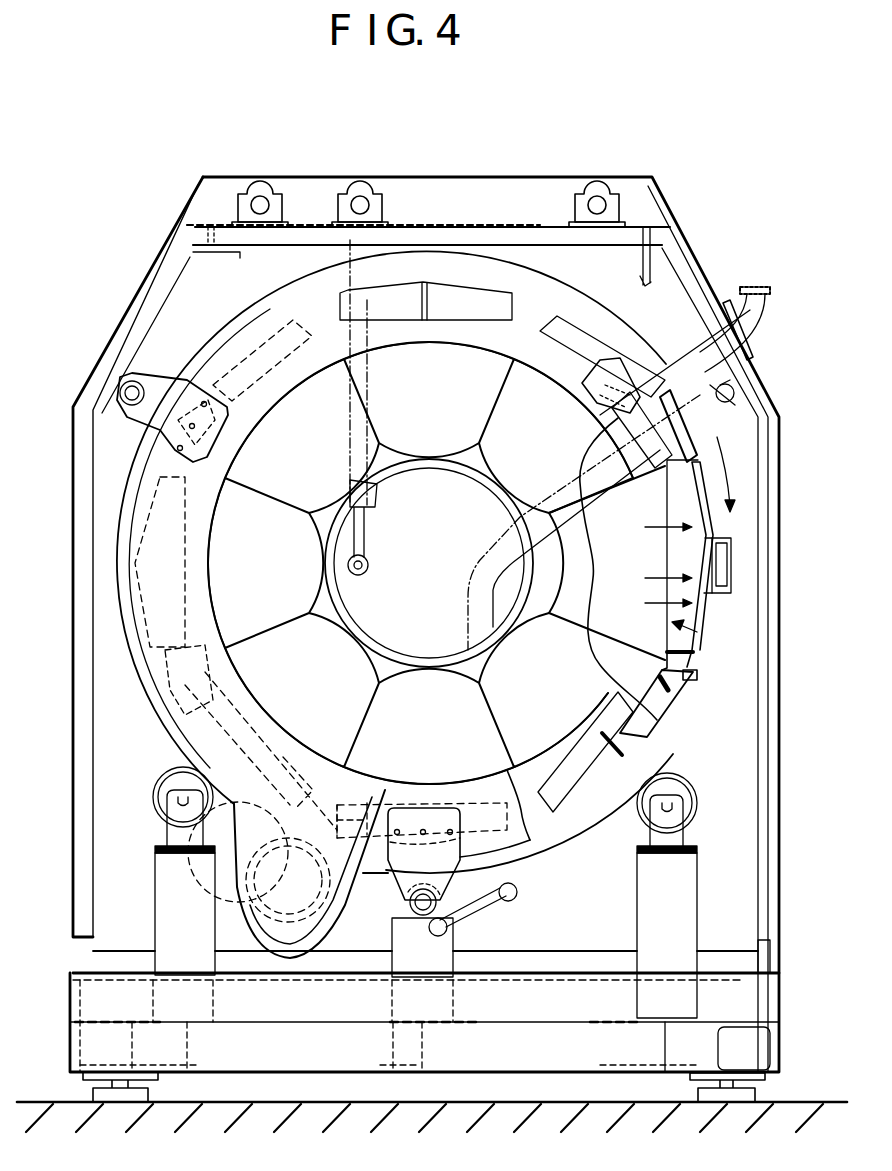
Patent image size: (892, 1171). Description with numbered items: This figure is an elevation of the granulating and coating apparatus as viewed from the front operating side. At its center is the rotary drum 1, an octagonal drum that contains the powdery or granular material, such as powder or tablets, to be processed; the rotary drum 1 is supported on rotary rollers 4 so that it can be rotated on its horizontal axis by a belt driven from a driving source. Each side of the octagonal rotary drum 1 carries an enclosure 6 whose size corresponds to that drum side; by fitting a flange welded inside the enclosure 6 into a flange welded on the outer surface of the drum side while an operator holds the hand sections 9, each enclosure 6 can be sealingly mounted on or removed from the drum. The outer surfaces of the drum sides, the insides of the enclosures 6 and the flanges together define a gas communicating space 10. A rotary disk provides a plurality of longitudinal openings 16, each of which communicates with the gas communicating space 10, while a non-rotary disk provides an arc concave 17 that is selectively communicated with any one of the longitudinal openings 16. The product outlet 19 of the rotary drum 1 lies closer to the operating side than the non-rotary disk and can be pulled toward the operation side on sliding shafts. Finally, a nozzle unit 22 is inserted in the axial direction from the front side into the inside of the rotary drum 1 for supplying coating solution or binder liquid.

The rotary drum 1 is at (703, 652).
The rotary rollers 4 is at (153, 797).
The enclosure 6 is at (708, 608).
The hand section 9 is at (730, 566).
The gas communicating space 10 is at (700, 532).
The longitudinal openings 16 is at (178, 700).
The arc concave 17 is at (175, 667).
The product outlet 19 is at (332, 576).
The nozzle unit 22 is at (350, 560).